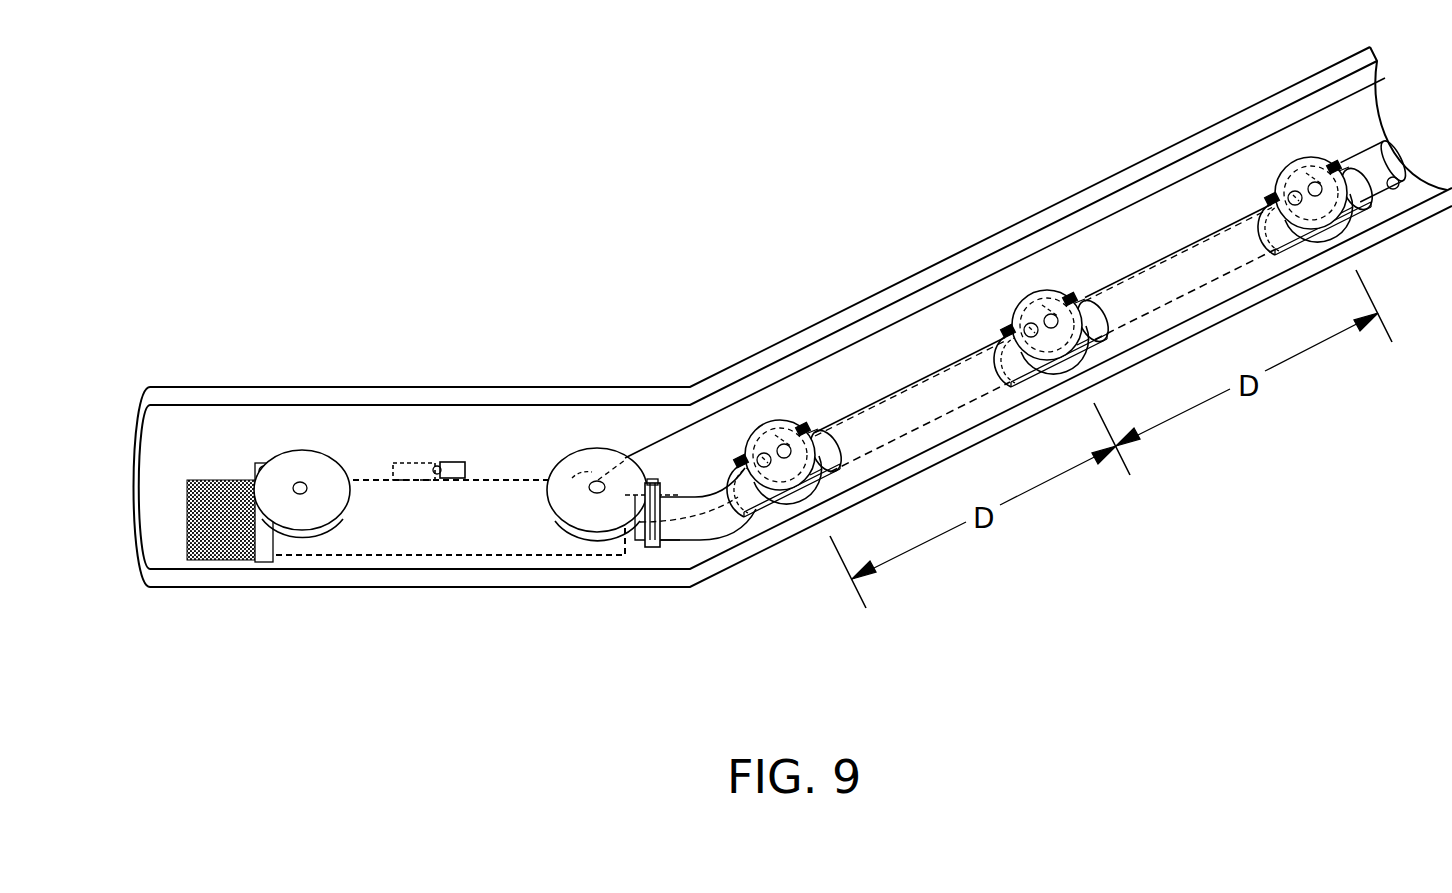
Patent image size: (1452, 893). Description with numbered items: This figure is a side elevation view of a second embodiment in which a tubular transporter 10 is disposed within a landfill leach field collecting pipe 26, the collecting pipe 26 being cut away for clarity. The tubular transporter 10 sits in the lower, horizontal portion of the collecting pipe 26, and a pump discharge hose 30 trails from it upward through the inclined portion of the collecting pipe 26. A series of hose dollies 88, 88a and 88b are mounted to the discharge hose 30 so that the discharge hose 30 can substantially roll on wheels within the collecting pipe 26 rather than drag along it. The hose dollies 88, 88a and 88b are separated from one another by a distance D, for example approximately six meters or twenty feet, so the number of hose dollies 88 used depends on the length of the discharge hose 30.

The collecting pipe 26 is at (1046, 209).
The tubular transporter 10 is at (480, 508).
The discharge hose 30 is at (885, 417).
The hose dolly 88 is at (788, 428).
The hose dolly 88a is at (1058, 300).
The hose dolly 88b is at (1326, 165).